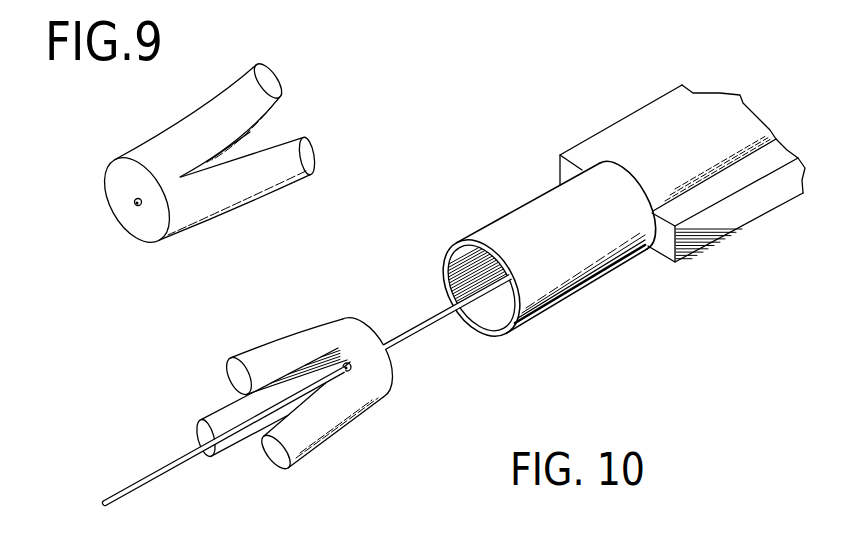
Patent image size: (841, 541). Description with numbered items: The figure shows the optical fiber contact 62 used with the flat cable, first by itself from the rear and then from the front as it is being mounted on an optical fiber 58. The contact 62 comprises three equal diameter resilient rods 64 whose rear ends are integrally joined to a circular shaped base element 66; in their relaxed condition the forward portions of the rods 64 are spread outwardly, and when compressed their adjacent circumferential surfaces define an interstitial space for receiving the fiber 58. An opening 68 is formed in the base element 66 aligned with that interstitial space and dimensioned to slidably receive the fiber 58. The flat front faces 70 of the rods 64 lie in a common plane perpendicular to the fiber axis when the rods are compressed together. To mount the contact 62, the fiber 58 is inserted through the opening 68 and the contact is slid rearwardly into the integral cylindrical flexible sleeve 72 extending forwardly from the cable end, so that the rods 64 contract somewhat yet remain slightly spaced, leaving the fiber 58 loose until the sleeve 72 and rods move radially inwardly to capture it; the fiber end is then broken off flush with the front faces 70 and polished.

In FIG. 10, the optical fiber 58 is at (178, 460).
In FIG. 10, the contact 62 is at (319, 301).
In FIG. 9, the resilient rods 64 is at (265, 103).
In FIG. 9, the base element 66 is at (147, 230).
In FIG. 9, the opening 68 is at (137, 203).
In FIG. 10, the flat front faces 70 is at (236, 377).
In FIG. 10, the flexible sleeve 72 is at (560, 273).